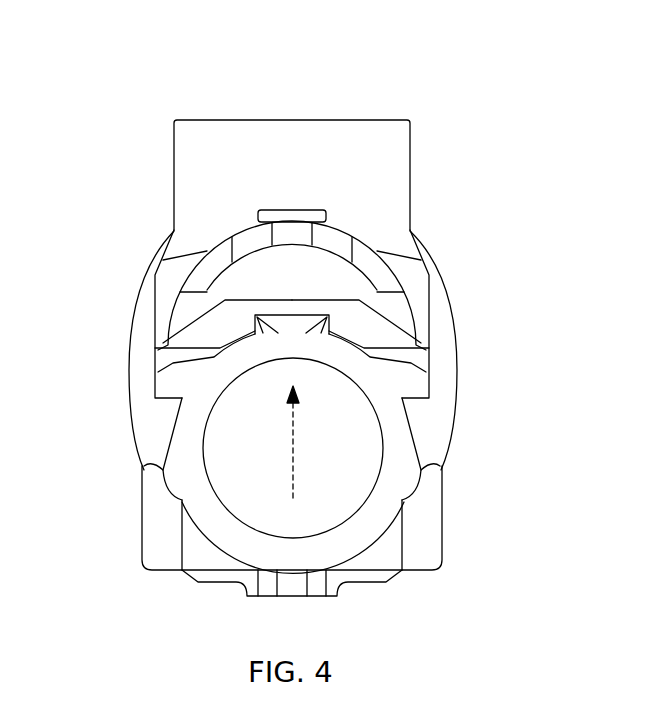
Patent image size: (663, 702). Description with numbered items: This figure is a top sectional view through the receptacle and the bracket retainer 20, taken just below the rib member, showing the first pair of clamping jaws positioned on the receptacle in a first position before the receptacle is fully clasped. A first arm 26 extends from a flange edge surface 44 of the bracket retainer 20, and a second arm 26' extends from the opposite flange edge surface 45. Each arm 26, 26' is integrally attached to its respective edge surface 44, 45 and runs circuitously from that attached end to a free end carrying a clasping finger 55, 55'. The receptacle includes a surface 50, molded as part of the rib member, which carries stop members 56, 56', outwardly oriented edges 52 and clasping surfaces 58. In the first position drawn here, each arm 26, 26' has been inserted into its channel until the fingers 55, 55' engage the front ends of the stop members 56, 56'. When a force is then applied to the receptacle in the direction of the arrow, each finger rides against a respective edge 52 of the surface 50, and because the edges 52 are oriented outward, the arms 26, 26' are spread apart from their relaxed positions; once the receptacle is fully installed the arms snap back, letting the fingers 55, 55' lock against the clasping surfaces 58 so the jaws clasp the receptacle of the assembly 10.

The connector 10 is at (400, 620).
The bracket retainer 20 is at (334, 62).
The first arm 26 is at (363, 345).
The second arm 26' is at (168, 346).
The edge surface 44 is at (410, 183).
The edge surface 45 is at (174, 197).
The surface 50 is at (340, 545).
The edge 52 is at (412, 410).
The clasping finger 55 is at (482, 441).
The clasping finger 55' is at (102, 447).
The stop member 56 is at (413, 341).
The stop member 56' is at (173, 341).
The clasping surface 58 is at (413, 490).